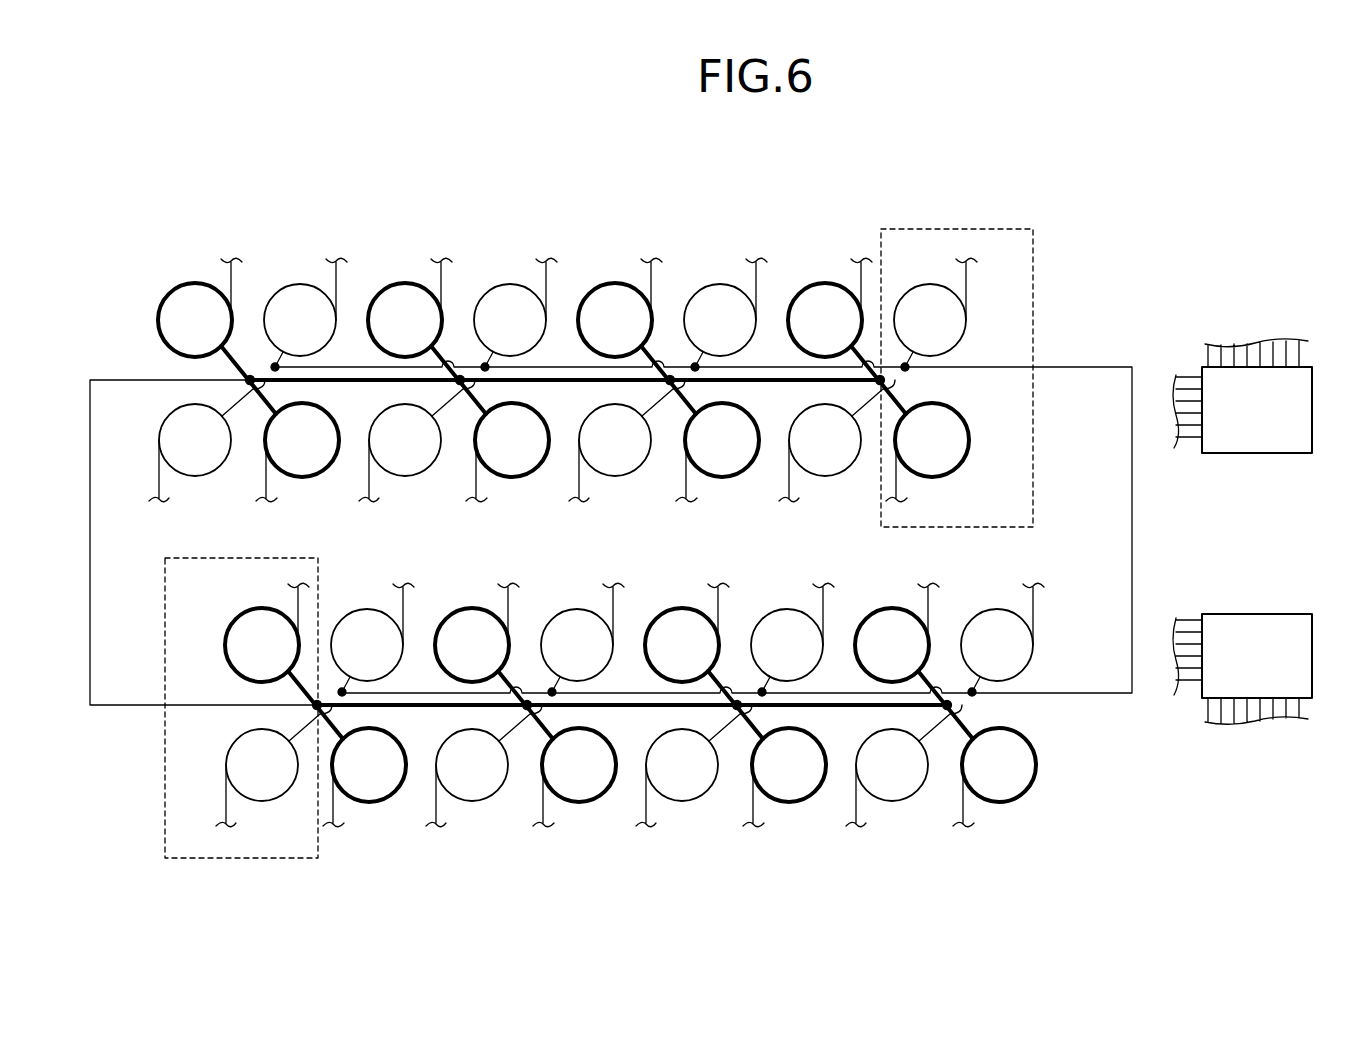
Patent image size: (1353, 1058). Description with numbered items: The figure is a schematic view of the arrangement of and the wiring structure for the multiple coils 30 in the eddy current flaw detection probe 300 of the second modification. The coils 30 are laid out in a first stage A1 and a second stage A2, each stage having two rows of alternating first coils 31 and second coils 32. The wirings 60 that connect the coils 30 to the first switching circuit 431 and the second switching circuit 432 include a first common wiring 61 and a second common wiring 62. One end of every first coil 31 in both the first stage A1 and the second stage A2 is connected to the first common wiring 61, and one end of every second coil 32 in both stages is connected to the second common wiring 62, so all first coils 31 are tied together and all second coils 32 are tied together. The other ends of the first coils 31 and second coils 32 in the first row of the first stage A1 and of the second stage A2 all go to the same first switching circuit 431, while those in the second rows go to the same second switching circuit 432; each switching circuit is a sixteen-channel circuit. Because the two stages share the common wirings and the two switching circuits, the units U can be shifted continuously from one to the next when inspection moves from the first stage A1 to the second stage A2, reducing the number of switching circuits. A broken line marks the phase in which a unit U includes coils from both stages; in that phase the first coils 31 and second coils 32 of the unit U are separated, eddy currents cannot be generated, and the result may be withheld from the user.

The eddy current flaw detection probe 300 is at (1092, 199).
The coil 30 is at (596, 542).
The first coil 31 is at (968, 447).
The second coil 32 is at (968, 328).
The wiring 60 is at (1240, 535).
The first common wiring 61 is at (90, 570).
The second common wiring 62 is at (1130, 442).
The first switching circuit 431 is at (1267, 453).
The second switching circuit 432 is at (1267, 613).
The unit U is at (938, 229).
The first stage A1 is at (1086, 333).
The second stage A2 is at (1086, 728).